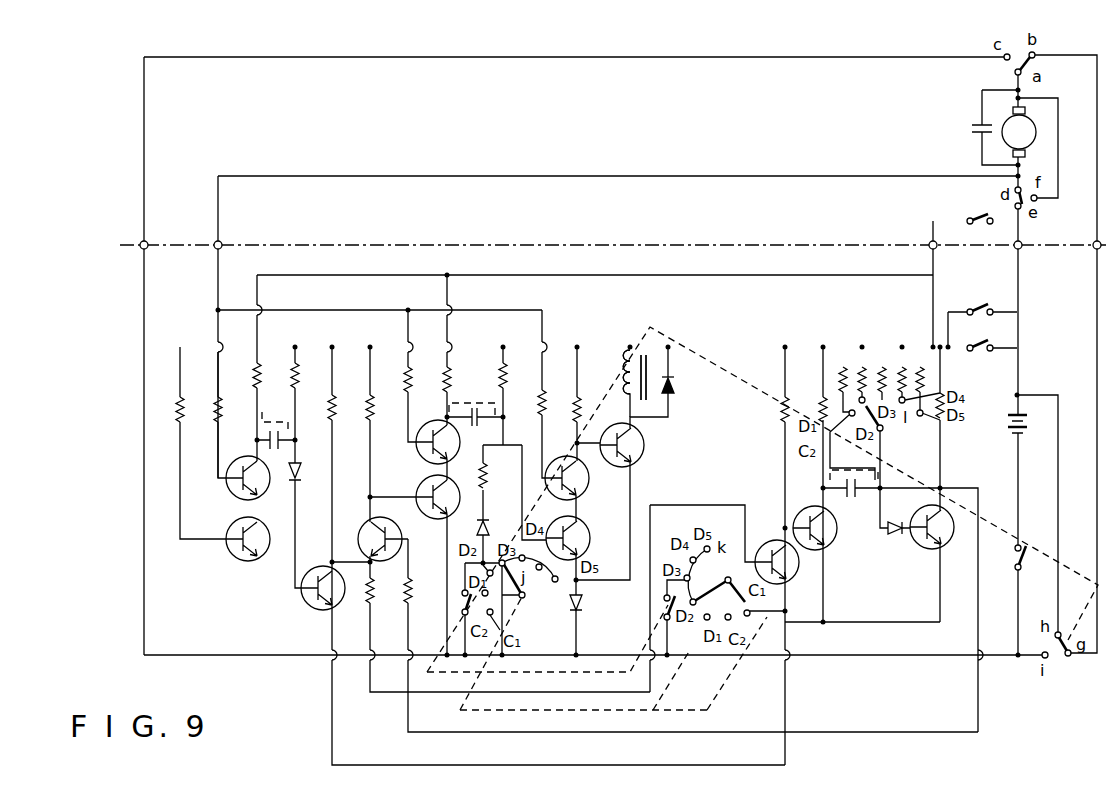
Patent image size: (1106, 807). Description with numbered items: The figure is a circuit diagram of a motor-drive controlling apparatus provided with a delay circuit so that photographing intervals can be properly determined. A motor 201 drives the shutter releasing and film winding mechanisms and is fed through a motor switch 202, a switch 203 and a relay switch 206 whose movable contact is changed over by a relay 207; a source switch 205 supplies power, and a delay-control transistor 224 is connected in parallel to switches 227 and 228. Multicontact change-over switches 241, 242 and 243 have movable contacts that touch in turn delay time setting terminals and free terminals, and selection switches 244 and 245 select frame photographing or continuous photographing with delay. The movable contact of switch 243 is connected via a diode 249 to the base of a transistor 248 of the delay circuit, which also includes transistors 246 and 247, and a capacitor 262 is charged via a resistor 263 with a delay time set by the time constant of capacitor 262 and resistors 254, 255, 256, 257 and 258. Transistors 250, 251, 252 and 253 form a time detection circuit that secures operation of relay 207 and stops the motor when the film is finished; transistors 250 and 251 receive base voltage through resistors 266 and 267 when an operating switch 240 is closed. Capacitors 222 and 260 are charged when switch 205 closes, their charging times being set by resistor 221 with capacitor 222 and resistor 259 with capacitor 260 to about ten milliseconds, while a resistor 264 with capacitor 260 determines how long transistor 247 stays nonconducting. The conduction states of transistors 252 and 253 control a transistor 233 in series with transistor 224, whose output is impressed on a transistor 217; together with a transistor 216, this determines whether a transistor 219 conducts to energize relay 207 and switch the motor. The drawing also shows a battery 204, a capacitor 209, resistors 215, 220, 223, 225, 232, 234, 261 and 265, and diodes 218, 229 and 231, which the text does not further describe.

The motor 201 is at (1036, 130).
The motor switch 202 is at (1016, 42).
The switch 203 is at (1036, 203).
The battery 204 is at (1008, 423).
The source switch 205 is at (1015, 575).
The relay switch 206 is at (1064, 661).
The relay 207 is at (626, 373).
The capacitor 209 is at (968, 129).
The resistor 215 is at (582, 408).
The transistor 216 is at (590, 479).
The transistor 217 is at (591, 533).
The diode 218 is at (582, 606).
The transistor 219 is at (646, 447).
The resistor 220 is at (541, 402).
The resistor 221 is at (501, 379).
The capacitor 222 is at (481, 424).
The resistor 223 is at (444, 378).
The transistor 224 is at (417, 451).
The resistor 225 is at (405, 378).
The switch 227 is at (966, 218).
The switch 228 is at (988, 352).
The diode 229 is at (675, 385).
The diode 231 is at (490, 527).
The resistor 232 is at (485, 472).
The transistor 233 is at (417, 493).
The resistor 234 is at (367, 405).
The operating switch 240 is at (990, 306).
The multicontact change-over switch 241 is at (526, 603).
The multicontact change-over switch 242 is at (717, 583).
The multicontact change-over switch 243 is at (937, 421).
The selection switch 244 is at (409, 592).
The selection switch 245 is at (662, 609).
The transistor 246 is at (779, 545).
The transistor 247 is at (832, 540).
The transistor 248 is at (928, 510).
The diode 249 is at (895, 536).
The transistor 250 is at (233, 492).
The transistor 251 is at (232, 529).
The transistor 252 is at (305, 600).
The transistor 253 is at (367, 524).
The resistor 254 is at (843, 362).
The resistor 255 is at (862, 362).
The resistor 256 is at (882, 362).
The resistor 257 is at (902, 362).
The resistor 258 is at (920, 362).
The resistor 259 is at (254, 382).
The capacitor 260 is at (292, 446).
The resistor 261 is at (364, 602).
The capacitor 262 is at (851, 497).
The resistor 263 is at (821, 404).
The resistor 264 is at (292, 382).
The resistor 265 is at (330, 405).
The resistor 266 is at (216, 403).
The resistor 267 is at (178, 403).